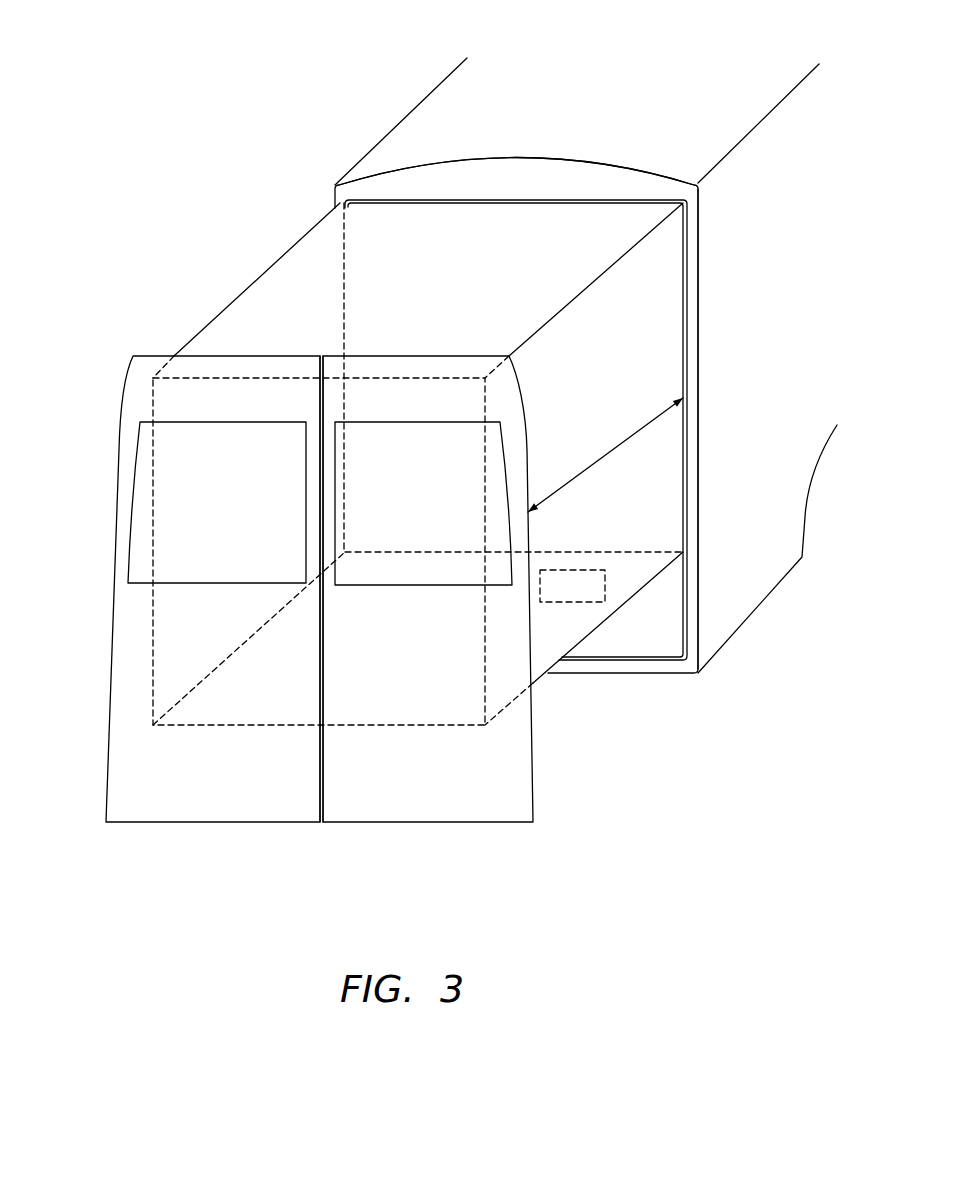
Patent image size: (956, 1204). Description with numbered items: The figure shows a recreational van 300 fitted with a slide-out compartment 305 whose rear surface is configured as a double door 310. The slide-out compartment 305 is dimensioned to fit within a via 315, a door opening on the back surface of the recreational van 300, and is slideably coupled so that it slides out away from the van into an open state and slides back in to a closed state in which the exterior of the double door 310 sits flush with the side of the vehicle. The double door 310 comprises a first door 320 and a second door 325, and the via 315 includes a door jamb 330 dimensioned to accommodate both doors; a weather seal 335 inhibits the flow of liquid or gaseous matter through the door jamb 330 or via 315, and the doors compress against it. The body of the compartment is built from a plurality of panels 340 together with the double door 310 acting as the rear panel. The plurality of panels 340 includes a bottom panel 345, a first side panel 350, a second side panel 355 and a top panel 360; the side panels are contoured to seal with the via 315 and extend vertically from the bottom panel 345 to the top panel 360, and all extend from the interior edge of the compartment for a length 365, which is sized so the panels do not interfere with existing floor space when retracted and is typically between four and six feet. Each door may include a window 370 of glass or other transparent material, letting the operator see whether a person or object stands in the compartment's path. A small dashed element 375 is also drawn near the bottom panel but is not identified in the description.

The recreational van 300 is at (168, 83).
The slide-out compartment 305 is at (632, 708).
The double door 310 is at (280, 822).
The via 315 is at (688, 287).
The first door 320 is at (135, 812).
The second door 325 is at (437, 813).
The door jamb 330 is at (610, 198).
The weather seal 335 is at (480, 178).
The plurality of panels 340 is at (272, 300).
The bottom panel 345 is at (537, 683).
The first side panel 350 is at (215, 317).
The second side panel 355 is at (665, 328).
The top panel 360 is at (362, 243).
The length 365 is at (610, 462).
The window 370 is at (168, 495).
The sensor 375 is at (599, 587).